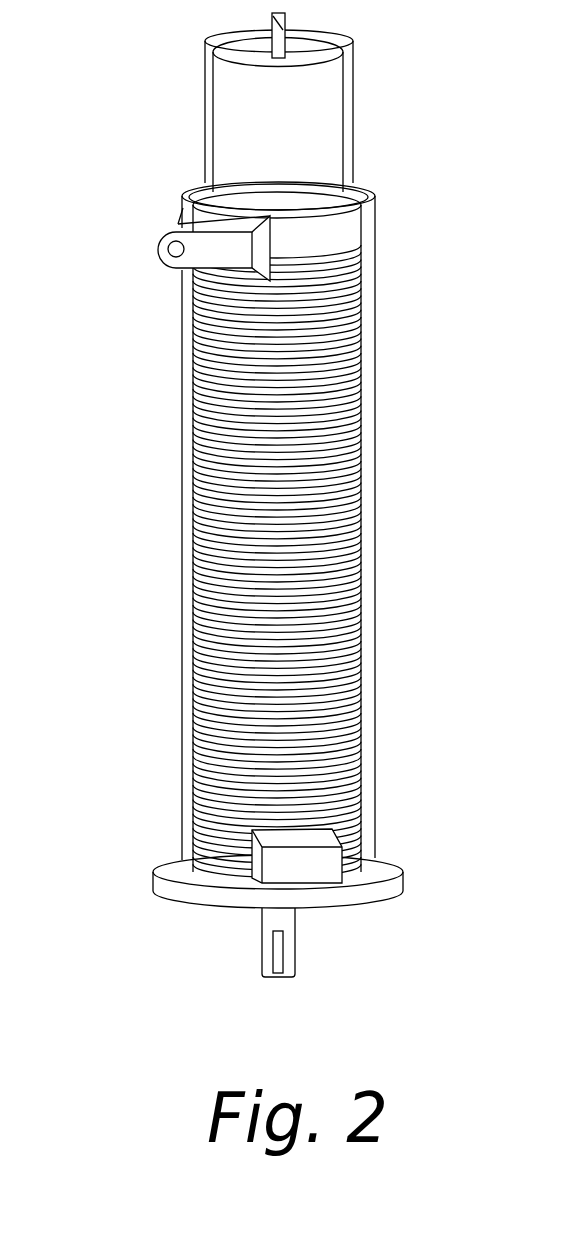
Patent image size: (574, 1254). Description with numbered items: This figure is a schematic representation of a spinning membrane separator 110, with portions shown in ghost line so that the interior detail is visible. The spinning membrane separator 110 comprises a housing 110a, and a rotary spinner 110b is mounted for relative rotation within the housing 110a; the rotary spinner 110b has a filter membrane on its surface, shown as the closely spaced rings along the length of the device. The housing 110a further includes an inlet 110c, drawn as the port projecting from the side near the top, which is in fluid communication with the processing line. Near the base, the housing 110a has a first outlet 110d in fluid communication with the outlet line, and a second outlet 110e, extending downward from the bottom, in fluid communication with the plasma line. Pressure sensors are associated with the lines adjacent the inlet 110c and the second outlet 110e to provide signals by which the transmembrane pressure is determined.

The spinning membrane separator 110 is at (269, 495).
The housing 110a is at (182, 722).
The rotary spinner 110b is at (197, 545).
The inlet 110c is at (160, 247).
The first outlet 110d is at (347, 876).
The second outlet 110e is at (297, 943).